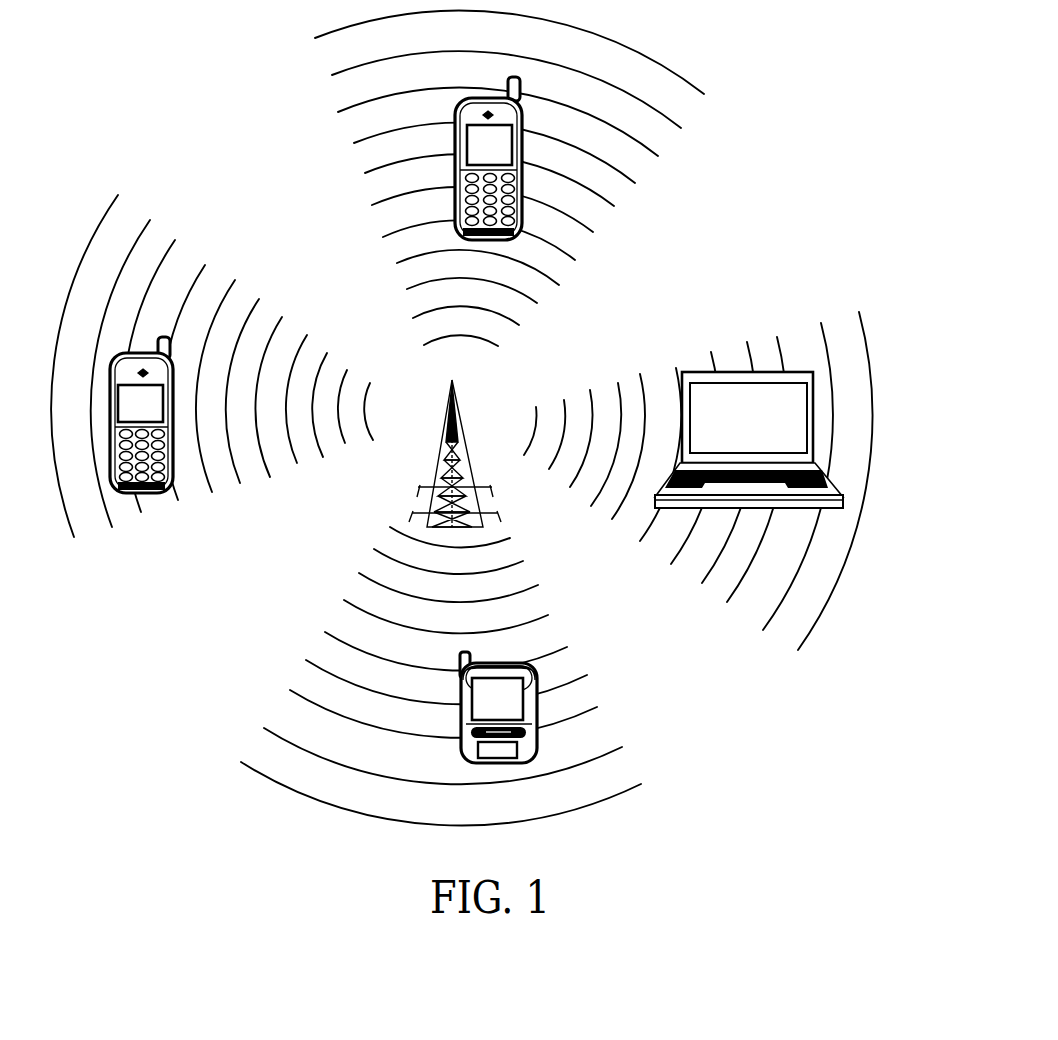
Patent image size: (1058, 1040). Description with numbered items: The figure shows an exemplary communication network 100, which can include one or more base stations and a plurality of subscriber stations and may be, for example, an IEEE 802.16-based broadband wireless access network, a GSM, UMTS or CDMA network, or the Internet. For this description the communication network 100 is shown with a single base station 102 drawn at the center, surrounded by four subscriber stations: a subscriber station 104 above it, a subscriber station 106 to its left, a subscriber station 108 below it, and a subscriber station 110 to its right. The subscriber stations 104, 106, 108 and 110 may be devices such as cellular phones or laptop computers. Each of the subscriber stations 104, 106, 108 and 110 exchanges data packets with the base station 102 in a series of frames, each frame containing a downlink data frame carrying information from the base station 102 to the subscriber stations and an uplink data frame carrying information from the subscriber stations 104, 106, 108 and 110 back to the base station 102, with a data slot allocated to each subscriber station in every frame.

The communication network 100 is at (808, 819).
The base station 102 is at (462, 448).
The subscriber station 104 is at (452, 138).
The subscriber station 106 is at (140, 488).
The subscriber station 108 is at (538, 700).
The subscriber station 110 is at (728, 373).